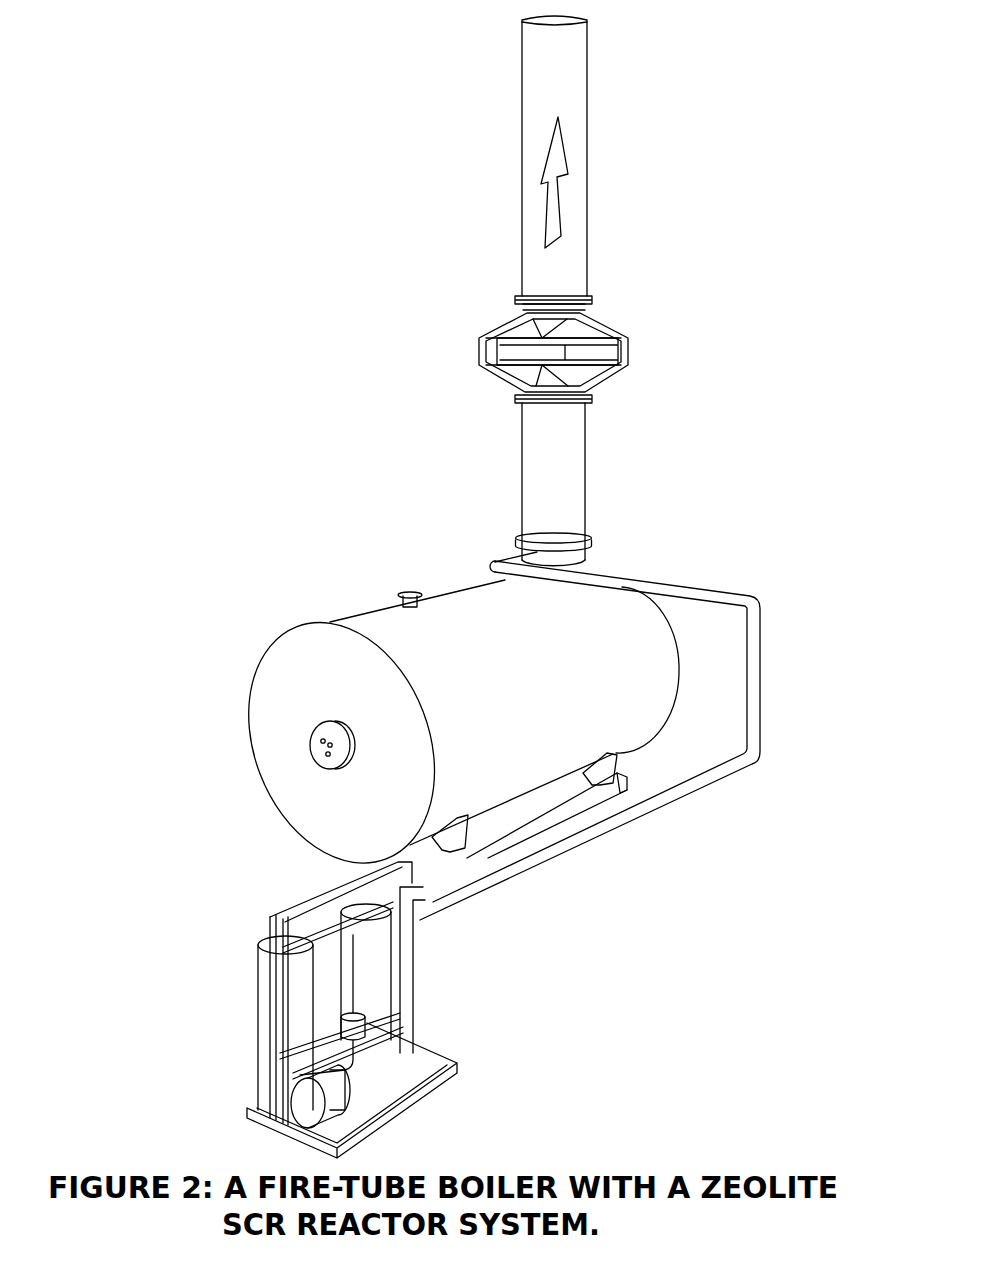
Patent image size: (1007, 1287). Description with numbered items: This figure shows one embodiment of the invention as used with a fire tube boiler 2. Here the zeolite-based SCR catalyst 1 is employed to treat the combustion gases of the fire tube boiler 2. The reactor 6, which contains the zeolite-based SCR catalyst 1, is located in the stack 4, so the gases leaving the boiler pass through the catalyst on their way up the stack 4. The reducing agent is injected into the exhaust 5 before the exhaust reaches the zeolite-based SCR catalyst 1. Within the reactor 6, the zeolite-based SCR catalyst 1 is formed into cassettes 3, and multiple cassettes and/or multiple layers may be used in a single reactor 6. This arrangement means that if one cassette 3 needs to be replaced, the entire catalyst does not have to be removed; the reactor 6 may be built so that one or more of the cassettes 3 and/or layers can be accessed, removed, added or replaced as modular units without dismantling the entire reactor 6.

The zeolite-based SCR catalyst 1 is at (530, 357).
The fire tube boiler 2 is at (338, 687).
The cassettes 3 is at (438, 308).
The stack 4 is at (573, 235).
The exhaust 5 is at (493, 565).
The reactor 6 is at (480, 308).